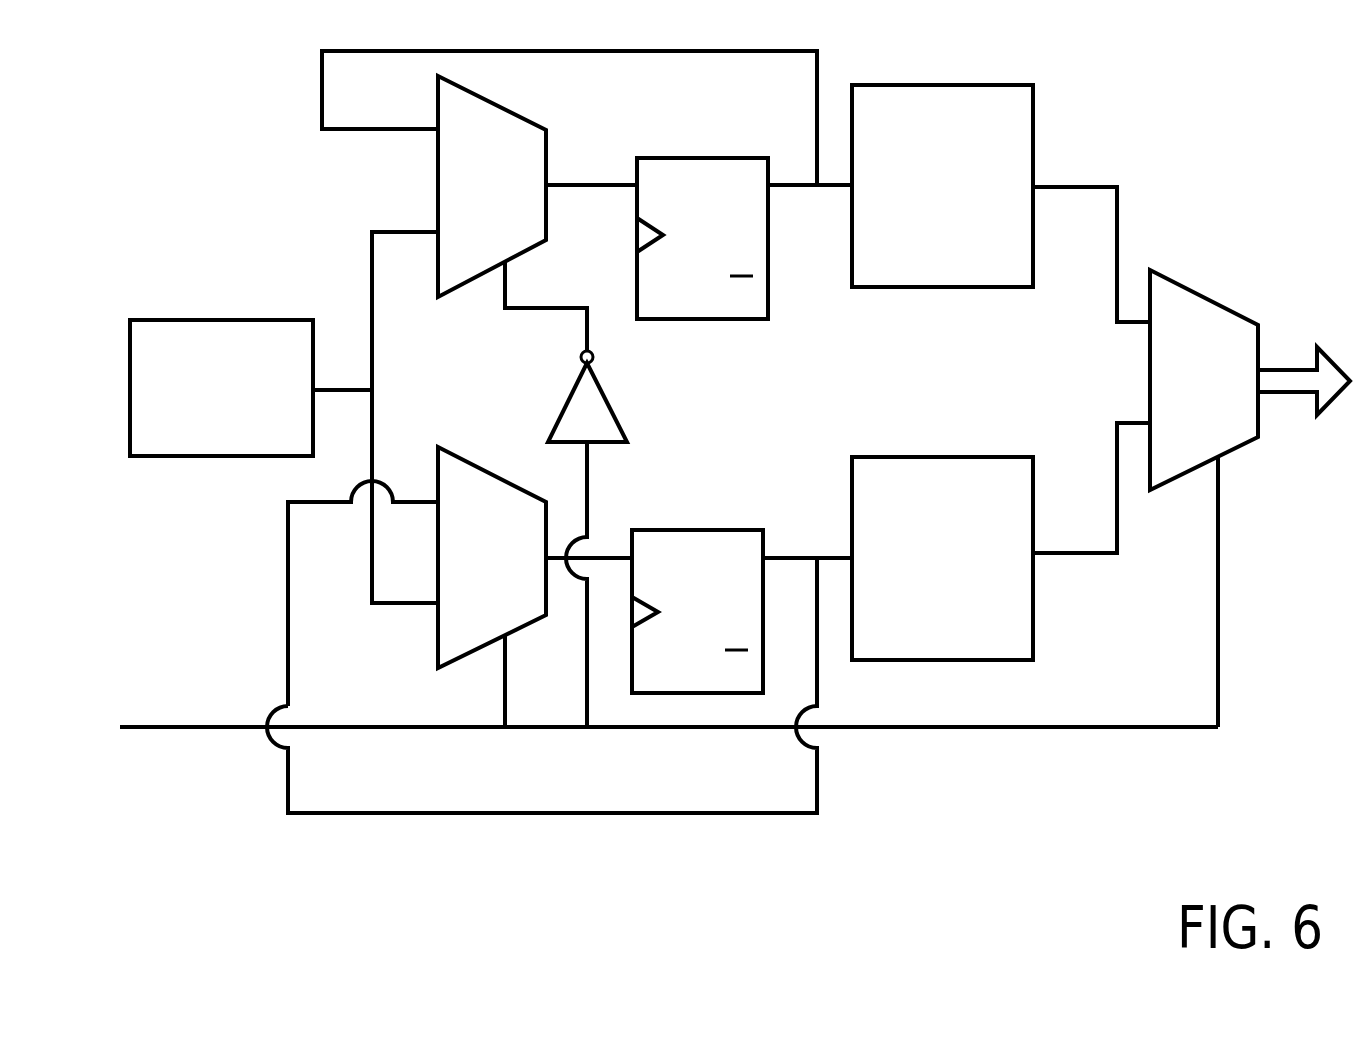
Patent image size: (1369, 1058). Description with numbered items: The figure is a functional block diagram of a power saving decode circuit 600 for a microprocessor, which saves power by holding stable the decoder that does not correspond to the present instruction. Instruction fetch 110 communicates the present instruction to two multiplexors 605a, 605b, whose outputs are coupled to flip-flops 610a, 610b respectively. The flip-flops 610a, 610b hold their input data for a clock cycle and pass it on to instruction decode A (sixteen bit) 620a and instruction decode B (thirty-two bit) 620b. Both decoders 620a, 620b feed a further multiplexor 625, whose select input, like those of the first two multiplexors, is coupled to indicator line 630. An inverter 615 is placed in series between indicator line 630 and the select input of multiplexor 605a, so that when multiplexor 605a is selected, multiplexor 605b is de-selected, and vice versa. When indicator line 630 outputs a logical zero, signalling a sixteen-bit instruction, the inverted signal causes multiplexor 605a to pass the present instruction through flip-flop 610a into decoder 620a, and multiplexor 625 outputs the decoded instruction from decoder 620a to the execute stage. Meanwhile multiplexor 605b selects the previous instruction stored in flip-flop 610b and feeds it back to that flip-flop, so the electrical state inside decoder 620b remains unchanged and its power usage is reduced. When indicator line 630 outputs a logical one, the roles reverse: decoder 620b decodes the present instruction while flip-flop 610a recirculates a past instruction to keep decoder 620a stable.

The power saving decode circuit 600 is at (928, 862).
The instruction fetch 110 is at (220, 456).
The multiplexor 605a is at (470, 280).
The multiplexor 605b is at (435, 637).
The flip-flop 610a is at (768, 305).
The flip-flop 610b is at (722, 530).
The inverter 615 is at (618, 417).
The instruction decode A (16 bit) 620a is at (965, 287).
The instruction decode B (32 bit) 620b is at (972, 457).
The multiplexor 625 is at (1187, 285).
The indicator line 630 is at (223, 745).